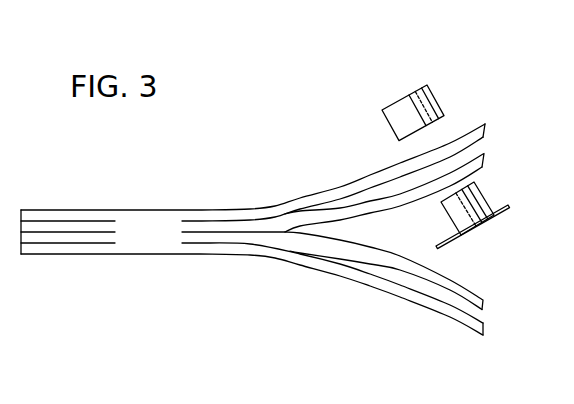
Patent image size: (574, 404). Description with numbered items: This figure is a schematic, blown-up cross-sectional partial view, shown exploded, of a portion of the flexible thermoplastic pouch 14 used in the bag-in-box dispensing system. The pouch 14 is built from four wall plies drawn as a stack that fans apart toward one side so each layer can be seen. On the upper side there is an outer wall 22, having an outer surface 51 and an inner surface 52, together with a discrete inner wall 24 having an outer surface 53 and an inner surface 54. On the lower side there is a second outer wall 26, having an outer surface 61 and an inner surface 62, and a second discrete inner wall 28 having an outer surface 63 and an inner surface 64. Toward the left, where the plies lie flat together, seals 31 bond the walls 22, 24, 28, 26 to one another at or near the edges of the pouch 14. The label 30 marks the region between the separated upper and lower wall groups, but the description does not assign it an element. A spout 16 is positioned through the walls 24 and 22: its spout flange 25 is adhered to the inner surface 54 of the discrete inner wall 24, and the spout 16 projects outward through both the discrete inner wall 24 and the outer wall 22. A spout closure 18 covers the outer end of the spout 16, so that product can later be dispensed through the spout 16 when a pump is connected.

The flexible thermoplastic pouch 14 is at (53, 198).
The seals 31 is at (148, 216).
The spout closure 18 is at (400, 100).
The spout 16 is at (486, 200).
The outer wall 22 is at (487, 127).
The discrete inner wall 24 is at (486, 156).
The discrete inner wall 28 is at (487, 305).
The outer wall 26 is at (487, 330).
The spout flange 25 is at (511, 212).
The separation zone 30 is at (406, 239).
The outer surface 51 is at (343, 187).
The inner surface 52 is at (454, 148).
The outer surface 53 is at (380, 202).
The inner surface 54 is at (352, 222).
The outer surface 61 is at (325, 270).
The inner surface 62 is at (467, 314).
The outer surface 63 is at (413, 272).
The inner surface 64 is at (455, 281).